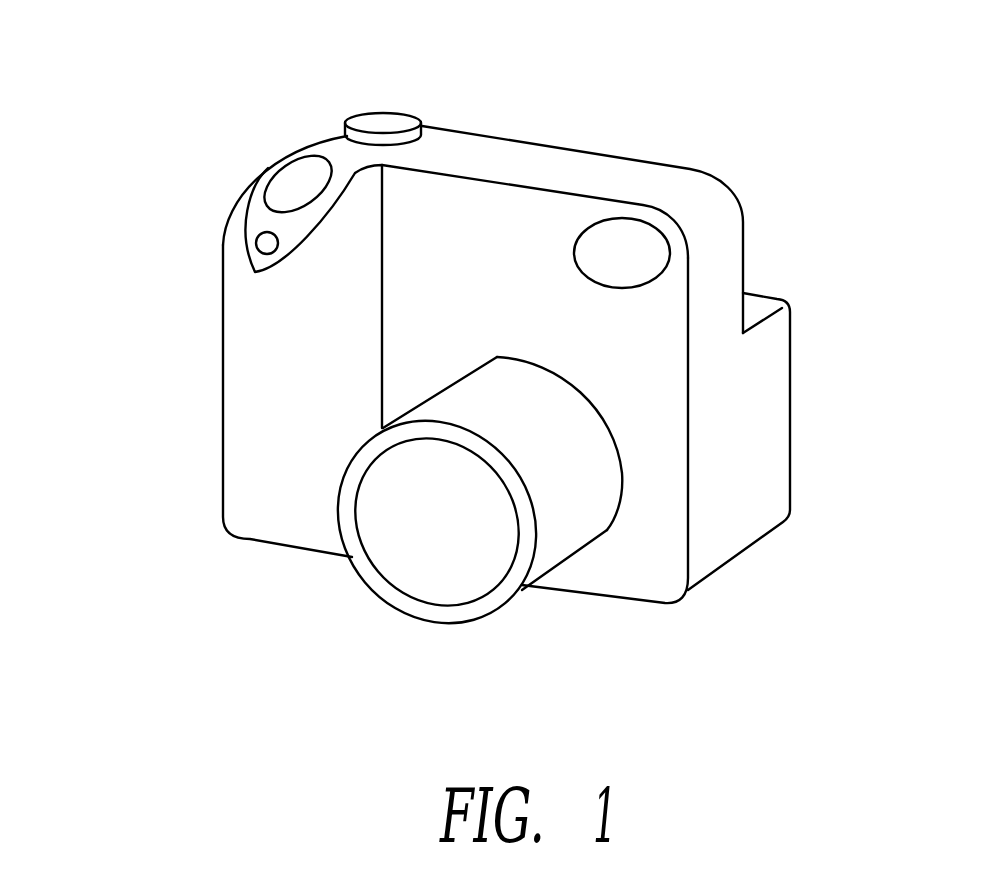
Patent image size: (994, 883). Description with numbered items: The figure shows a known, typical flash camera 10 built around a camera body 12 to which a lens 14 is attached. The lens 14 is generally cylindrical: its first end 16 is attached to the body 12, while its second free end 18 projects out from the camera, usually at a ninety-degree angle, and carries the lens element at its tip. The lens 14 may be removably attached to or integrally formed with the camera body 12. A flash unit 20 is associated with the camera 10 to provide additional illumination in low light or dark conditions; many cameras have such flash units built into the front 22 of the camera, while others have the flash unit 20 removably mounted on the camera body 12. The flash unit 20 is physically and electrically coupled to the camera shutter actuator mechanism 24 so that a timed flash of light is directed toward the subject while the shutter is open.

The flash camera 10 is at (165, 318).
The camera body 12 is at (760, 388).
The lens 14 is at (578, 505).
The first end 16 is at (615, 438).
The second free end 18 is at (433, 623).
The flash unit 20 is at (613, 218).
The front 22 is at (253, 208).
The camera shutter actuator mechanism 24 is at (383, 123).